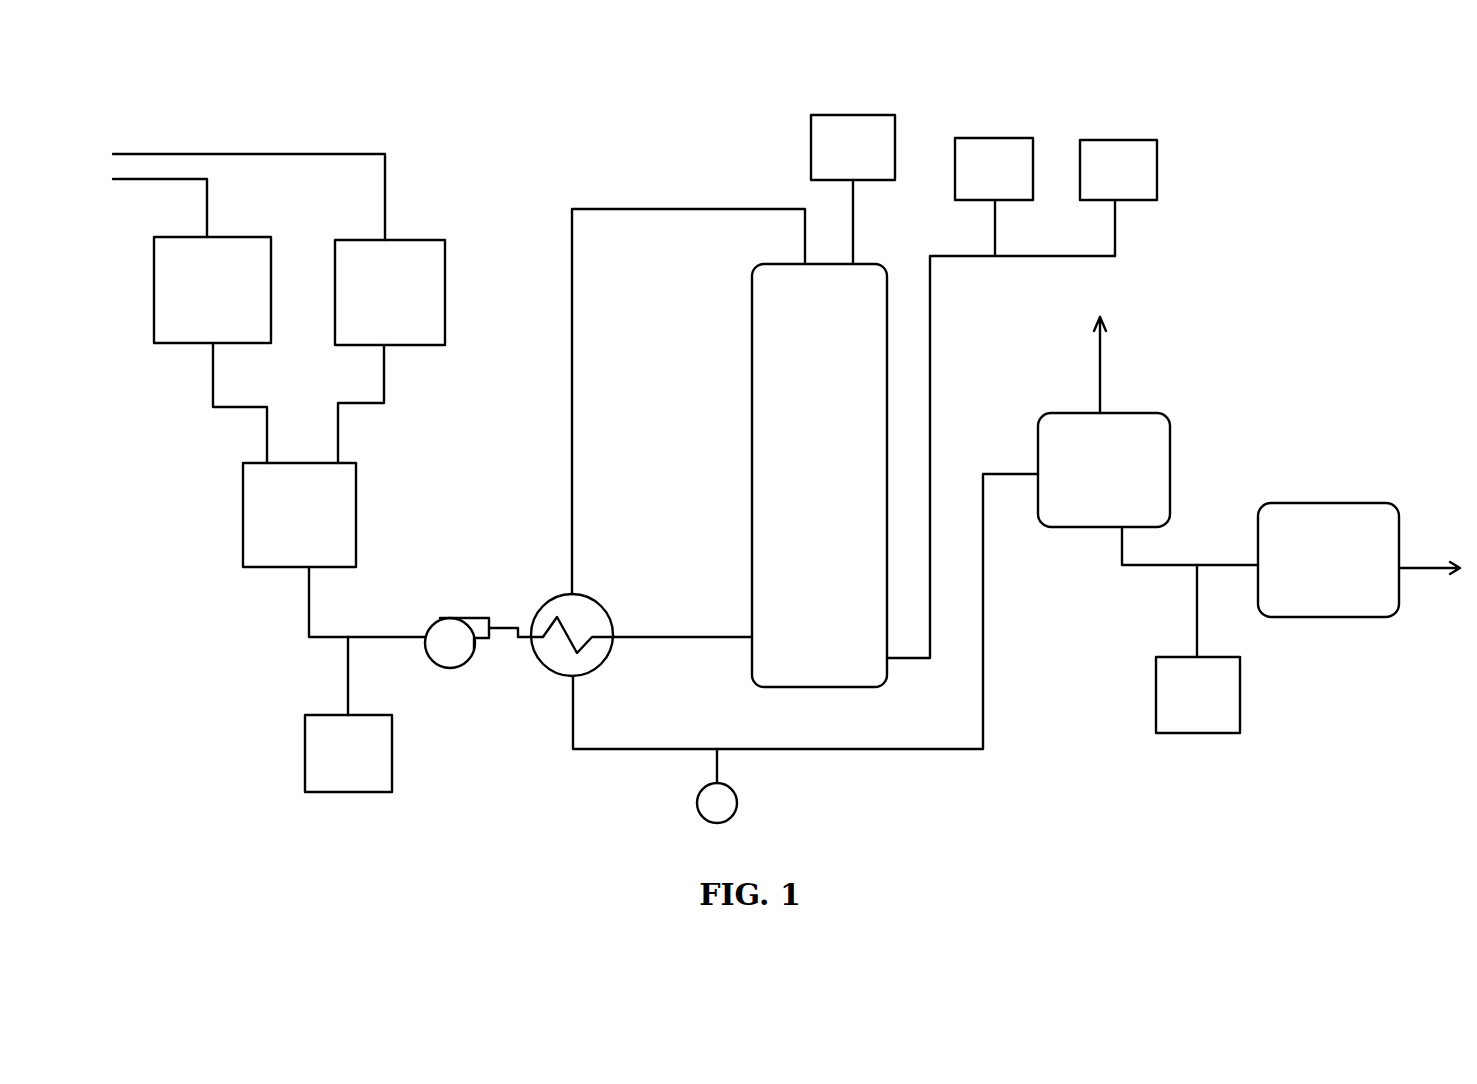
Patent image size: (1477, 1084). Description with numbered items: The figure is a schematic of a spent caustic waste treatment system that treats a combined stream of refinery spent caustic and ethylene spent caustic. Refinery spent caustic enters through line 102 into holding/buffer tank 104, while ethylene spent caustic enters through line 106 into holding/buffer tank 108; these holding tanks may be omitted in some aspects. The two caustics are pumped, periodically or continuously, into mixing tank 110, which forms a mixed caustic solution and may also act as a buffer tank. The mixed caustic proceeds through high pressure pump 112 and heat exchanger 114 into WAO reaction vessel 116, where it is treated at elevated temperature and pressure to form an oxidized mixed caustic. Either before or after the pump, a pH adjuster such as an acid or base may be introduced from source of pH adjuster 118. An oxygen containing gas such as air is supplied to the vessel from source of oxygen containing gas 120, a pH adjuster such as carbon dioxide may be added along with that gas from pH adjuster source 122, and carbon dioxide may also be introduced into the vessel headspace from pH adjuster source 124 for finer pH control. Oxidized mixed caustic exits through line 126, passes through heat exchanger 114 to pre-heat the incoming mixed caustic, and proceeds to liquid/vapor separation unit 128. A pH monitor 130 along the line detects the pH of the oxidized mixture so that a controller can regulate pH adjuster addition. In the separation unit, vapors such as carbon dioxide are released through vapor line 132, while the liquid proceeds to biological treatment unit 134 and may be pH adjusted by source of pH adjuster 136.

The line 102 is at (235, 153).
The holding/buffer tank 104 is at (348, 295).
The line 106 is at (207, 212).
The holding/buffer tank 108 is at (172, 305).
The mixing tank 110 is at (270, 527).
The high pressure pump 112 is at (452, 617).
The heat exchanger 114 is at (599, 605).
The WAO reaction vessel 116 is at (783, 498).
The source of pH adjuster 118 is at (323, 768).
The source of oxygen containing gas 120 is at (1093, 185).
The pH adjuster source 122 is at (969, 185).
The pH adjuster source 124 is at (828, 160).
The line 126 is at (622, 208).
The liquid/vapor separation unit 128 is at (1070, 475).
The pH monitor 130 is at (737, 803).
The vapor line 132 is at (1102, 393).
The biological treatment unit 134 is at (1303, 573).
The source of pH adjuster 136 is at (1173, 708).